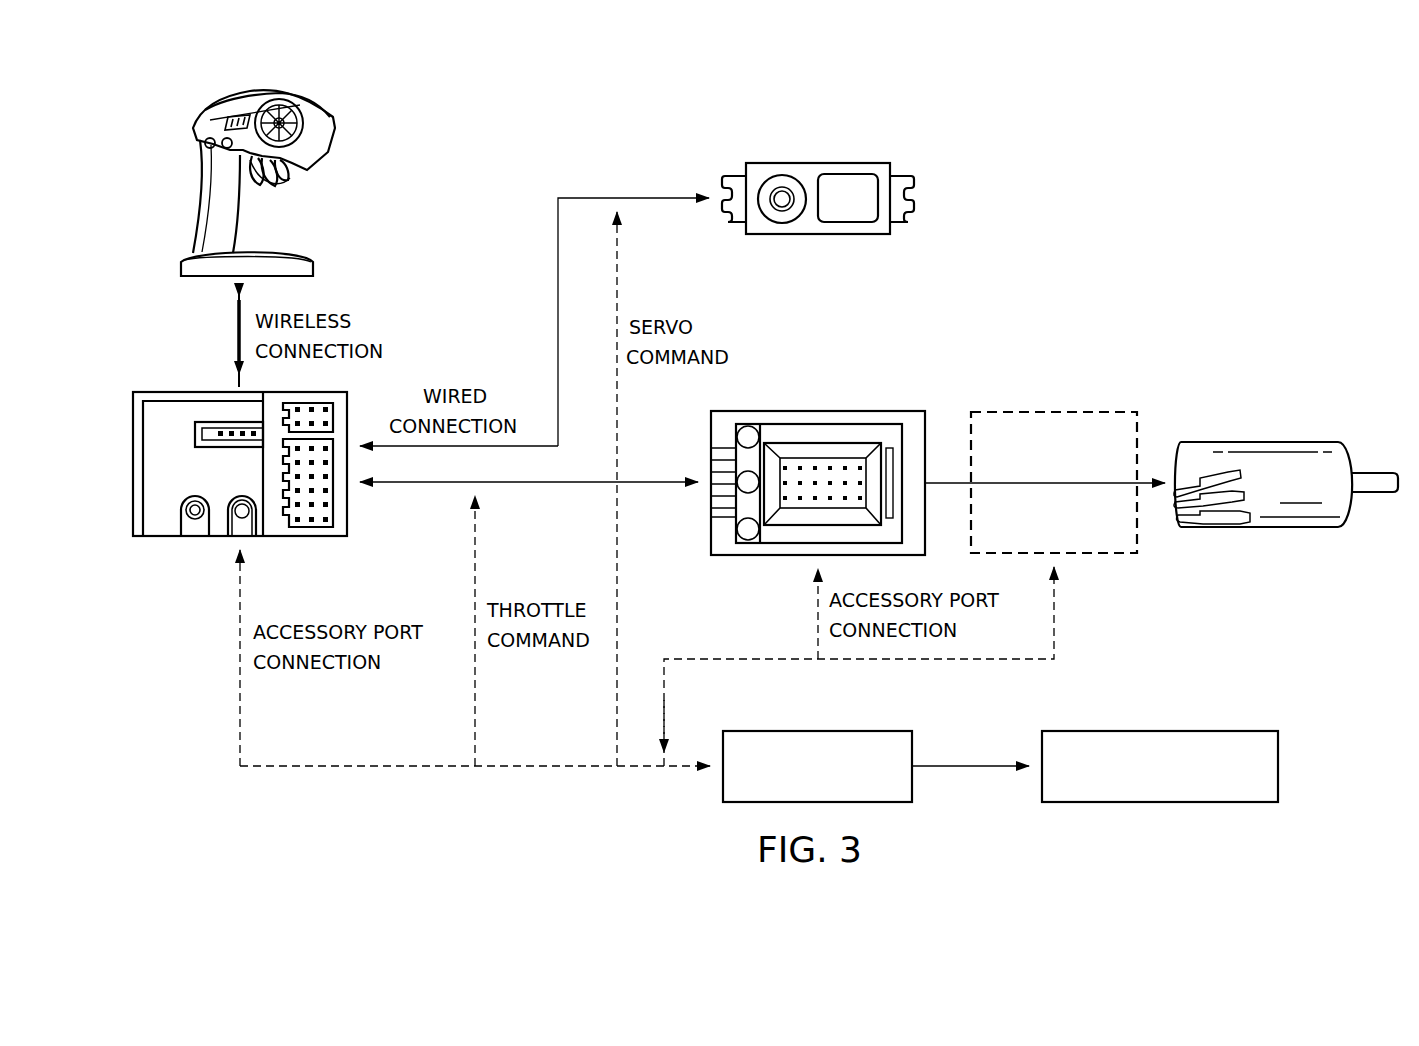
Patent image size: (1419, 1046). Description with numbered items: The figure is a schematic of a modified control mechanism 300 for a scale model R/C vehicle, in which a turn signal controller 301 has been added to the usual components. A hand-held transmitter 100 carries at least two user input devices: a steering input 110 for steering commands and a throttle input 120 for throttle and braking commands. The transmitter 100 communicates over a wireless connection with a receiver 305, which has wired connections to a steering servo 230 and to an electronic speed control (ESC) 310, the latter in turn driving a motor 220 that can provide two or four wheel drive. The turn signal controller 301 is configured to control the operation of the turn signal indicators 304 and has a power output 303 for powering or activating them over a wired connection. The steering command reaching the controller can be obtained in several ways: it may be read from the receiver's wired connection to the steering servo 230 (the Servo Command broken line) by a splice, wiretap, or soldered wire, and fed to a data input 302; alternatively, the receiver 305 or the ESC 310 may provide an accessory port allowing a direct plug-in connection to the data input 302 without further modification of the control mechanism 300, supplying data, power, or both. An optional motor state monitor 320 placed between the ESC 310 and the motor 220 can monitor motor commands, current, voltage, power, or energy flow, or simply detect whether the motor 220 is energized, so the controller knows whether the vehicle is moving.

The transmitter 100 is at (346, 128).
The steering input 110 is at (280, 97).
The throttle input 120 is at (291, 178).
The steering servo 230 is at (818, 163).
The modified control mechanism 300 is at (1122, 154).
The receiver 305 is at (165, 540).
The electronic speed control (ESC) 310 is at (830, 411).
The motor state monitor 320 is at (1080, 412).
The motor 220 is at (1266, 442).
The turn signal controller 301 is at (818, 731).
The data input 302 is at (720, 775).
The power output 303 is at (915, 774).
The turn signal indicators 304 is at (1160, 803).